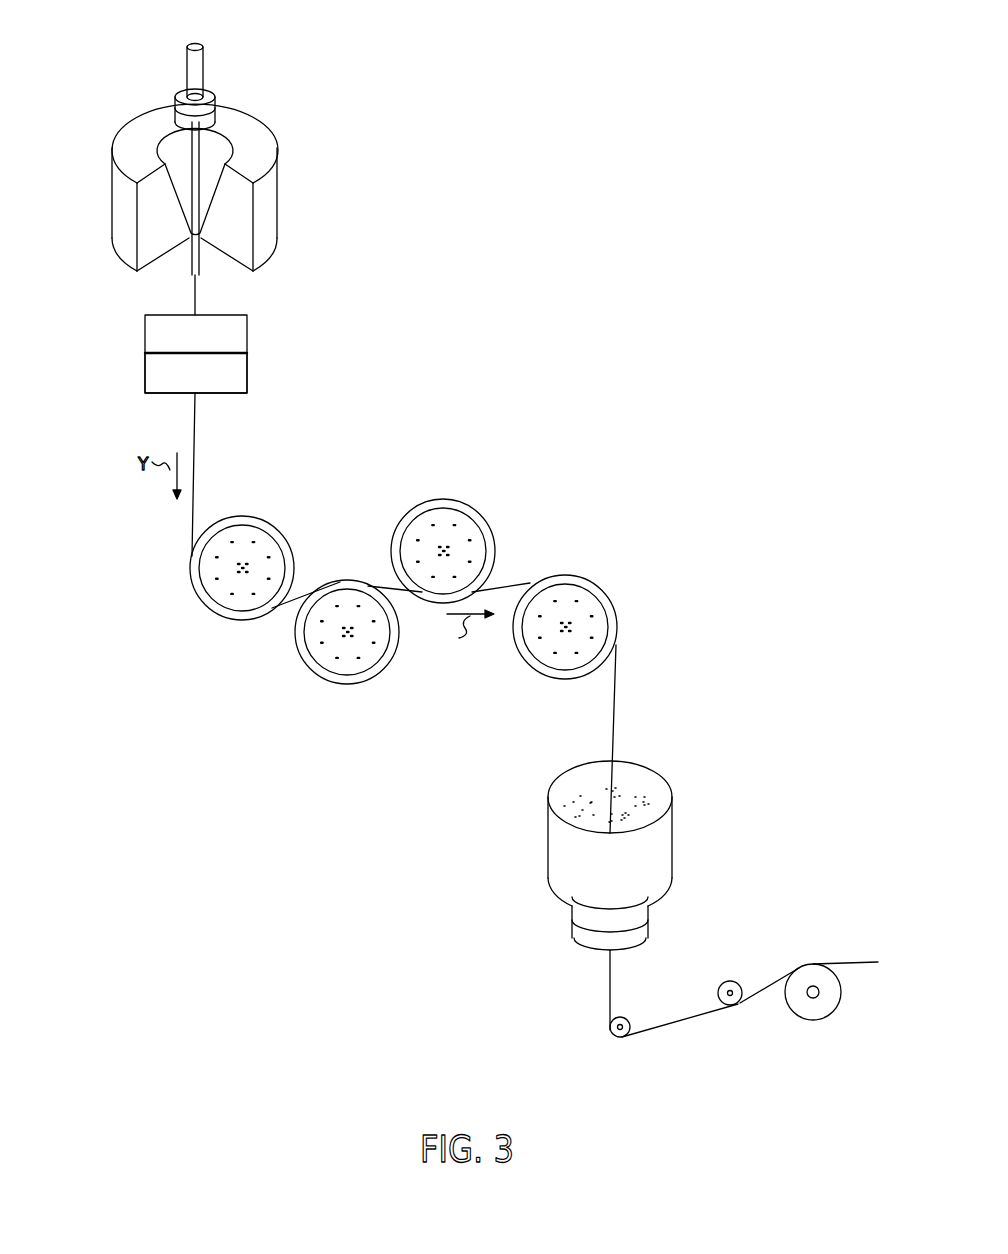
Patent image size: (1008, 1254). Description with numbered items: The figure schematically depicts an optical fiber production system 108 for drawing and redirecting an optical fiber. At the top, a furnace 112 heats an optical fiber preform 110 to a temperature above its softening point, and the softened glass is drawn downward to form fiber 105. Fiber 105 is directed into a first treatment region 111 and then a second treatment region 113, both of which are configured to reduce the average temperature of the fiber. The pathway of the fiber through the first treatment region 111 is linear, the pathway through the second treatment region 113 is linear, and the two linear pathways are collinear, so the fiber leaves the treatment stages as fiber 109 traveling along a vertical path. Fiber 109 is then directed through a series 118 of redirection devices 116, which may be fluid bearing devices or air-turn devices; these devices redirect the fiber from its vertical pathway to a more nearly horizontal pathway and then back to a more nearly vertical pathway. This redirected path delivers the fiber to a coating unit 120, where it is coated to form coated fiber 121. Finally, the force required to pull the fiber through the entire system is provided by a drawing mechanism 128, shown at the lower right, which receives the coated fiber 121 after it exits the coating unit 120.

The fiber 105 is at (193, 280).
The optical fiber production system 108 is at (386, 103).
The fiber 109 is at (142, 474).
The optical fiber preform 110 is at (200, 150).
The first treatment region 111 is at (247, 333).
The furnace 112 is at (280, 148).
The second treatment region 113 is at (247, 374).
The redirection devices 116 is at (268, 523).
The series of redirection devices 118 is at (377, 474).
The coating unit 120 is at (673, 824).
The coated fiber 121 is at (610, 984).
The drawing mechanism 128 is at (728, 981).